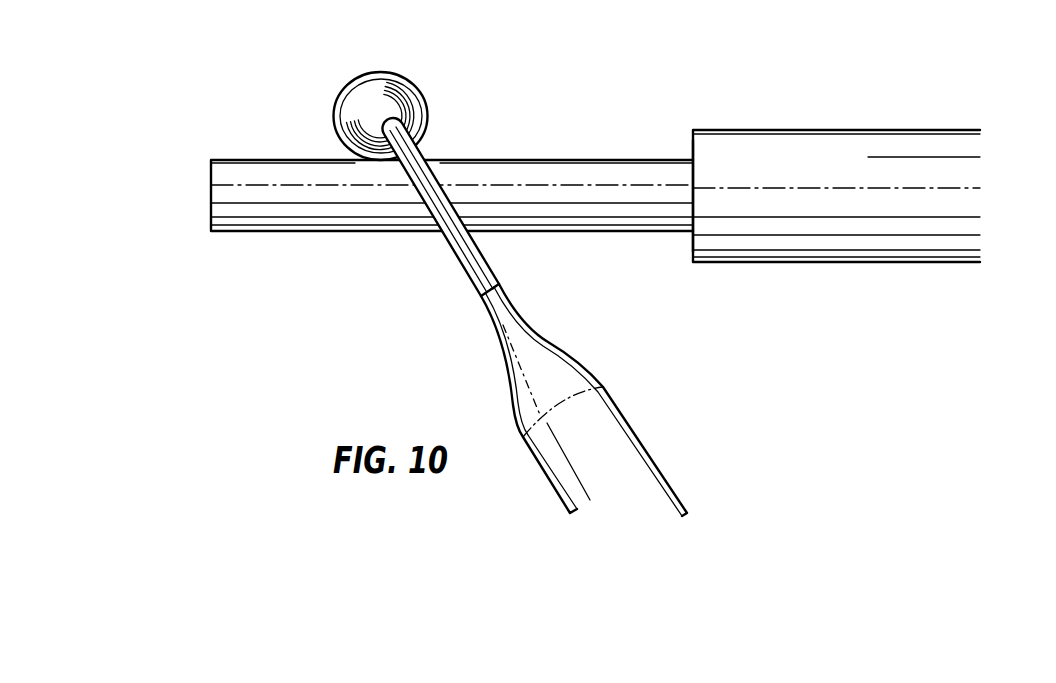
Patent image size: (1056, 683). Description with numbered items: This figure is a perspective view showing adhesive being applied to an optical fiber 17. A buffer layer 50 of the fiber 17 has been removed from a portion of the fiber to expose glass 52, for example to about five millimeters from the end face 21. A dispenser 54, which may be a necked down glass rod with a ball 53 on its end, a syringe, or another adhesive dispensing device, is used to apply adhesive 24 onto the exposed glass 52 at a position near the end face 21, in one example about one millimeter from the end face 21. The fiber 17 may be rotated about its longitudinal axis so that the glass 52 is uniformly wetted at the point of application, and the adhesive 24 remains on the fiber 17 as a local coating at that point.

The optical fiber 17 is at (763, 128).
The end face 21 is at (211, 190).
The adhesive 24 is at (400, 72).
The buffer layer 50 is at (693, 242).
The glass 52 is at (555, 160).
The ball 53 is at (366, 108).
The dispenser 54 is at (593, 450).